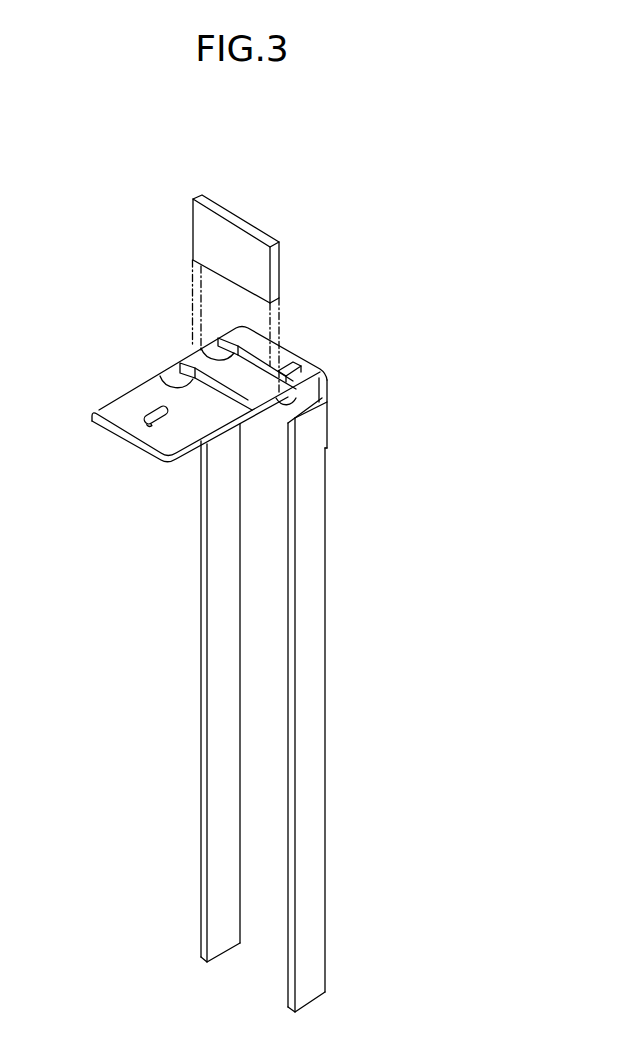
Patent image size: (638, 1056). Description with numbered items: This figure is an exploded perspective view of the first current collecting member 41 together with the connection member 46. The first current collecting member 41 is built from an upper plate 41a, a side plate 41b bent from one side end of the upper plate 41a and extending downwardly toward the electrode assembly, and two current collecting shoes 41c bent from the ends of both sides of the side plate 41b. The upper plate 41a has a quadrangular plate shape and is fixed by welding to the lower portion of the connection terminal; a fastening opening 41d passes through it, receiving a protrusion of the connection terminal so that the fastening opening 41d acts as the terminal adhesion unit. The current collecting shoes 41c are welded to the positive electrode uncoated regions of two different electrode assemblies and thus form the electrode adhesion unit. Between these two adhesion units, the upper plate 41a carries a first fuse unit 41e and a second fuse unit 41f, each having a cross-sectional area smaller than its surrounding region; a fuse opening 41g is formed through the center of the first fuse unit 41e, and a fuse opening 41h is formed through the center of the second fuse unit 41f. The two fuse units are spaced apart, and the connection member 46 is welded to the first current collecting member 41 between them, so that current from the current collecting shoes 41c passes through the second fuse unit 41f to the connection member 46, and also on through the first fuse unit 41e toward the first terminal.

The first current collecting member 41 is at (245, 648).
The upper plate 41a is at (186, 387).
The side plate 41b is at (310, 389).
The current collecting shoes 41c is at (222, 607).
The fastening opening 41d is at (142, 416).
The first fuse unit 41e is at (326, 421).
The second fuse unit 41f is at (288, 378).
The fuse opening 41g is at (166, 378).
The fuse opening 41h is at (205, 343).
The connection member 46 is at (248, 228).